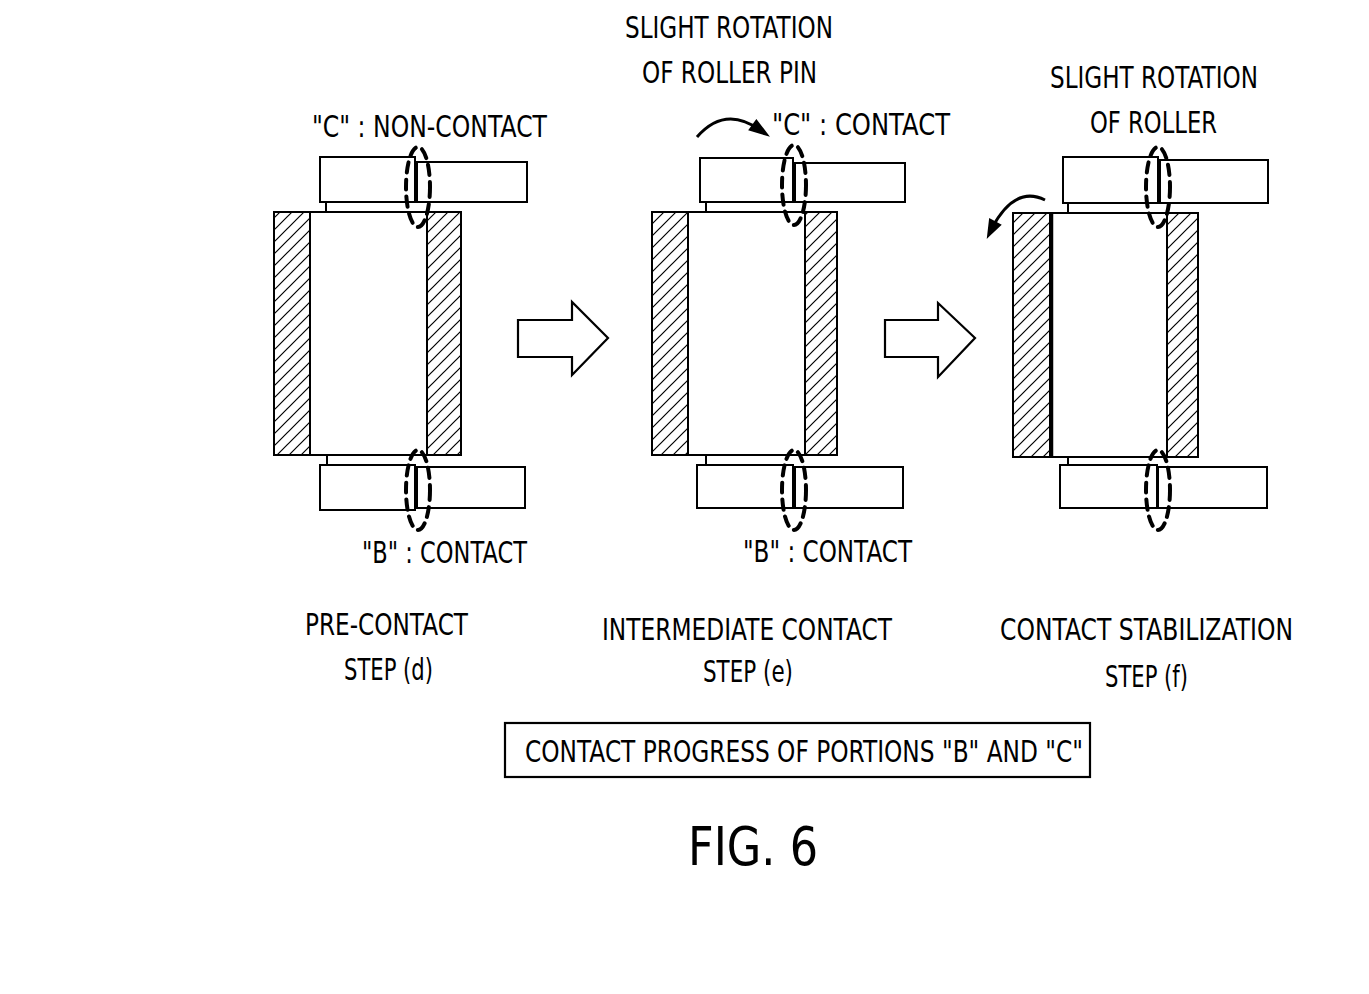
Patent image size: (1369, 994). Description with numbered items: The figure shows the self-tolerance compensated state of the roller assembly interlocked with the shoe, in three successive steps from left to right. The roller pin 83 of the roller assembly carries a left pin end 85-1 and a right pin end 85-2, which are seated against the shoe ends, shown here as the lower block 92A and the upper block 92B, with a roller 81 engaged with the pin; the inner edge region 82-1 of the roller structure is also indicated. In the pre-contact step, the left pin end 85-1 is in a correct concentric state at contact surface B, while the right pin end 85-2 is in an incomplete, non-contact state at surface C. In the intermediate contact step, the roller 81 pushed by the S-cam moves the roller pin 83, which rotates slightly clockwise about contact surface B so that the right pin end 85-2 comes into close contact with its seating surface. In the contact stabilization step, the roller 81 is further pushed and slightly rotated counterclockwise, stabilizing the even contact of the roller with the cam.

The roller 81 is at (287, 337).
The contact portion of roller pin 82-1 is at (305, 382).
The roller pin 83 is at (322, 273).
The left pin end 85-1 is at (338, 490).
The right pin end 85-2 is at (333, 177).
The first guide portion 92A is at (478, 465).
The second guide portion 92B is at (498, 183).